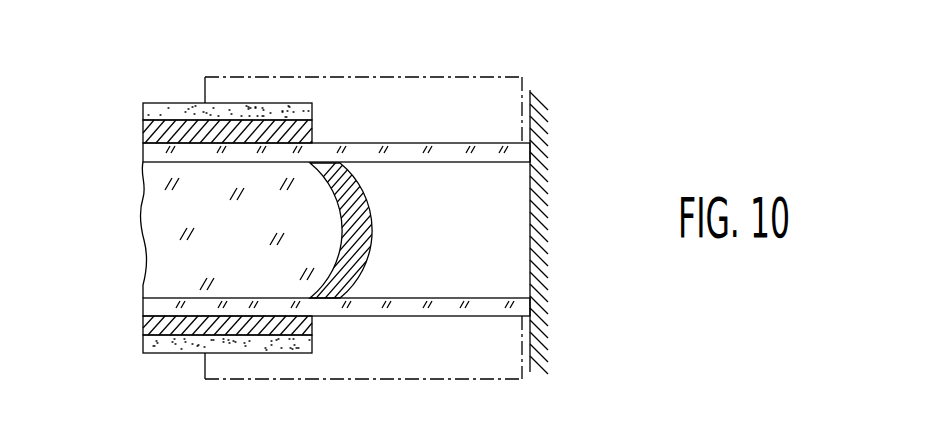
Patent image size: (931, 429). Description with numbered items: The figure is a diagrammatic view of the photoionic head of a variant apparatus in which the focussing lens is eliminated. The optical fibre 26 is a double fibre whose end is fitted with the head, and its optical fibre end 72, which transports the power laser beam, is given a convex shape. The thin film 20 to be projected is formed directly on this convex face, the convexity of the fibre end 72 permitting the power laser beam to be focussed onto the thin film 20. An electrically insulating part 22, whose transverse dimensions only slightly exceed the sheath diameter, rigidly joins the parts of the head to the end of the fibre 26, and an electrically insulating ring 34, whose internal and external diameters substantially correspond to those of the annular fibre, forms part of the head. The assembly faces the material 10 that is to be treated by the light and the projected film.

The material 10 is at (540, 138).
The thin film 20 is at (352, 203).
The electrically insulating part 22 is at (438, 73).
The optical fibre 26 is at (128, 188).
The electrically insulating ring 34 is at (495, 307).
The optical fibre end 72 is at (340, 257).